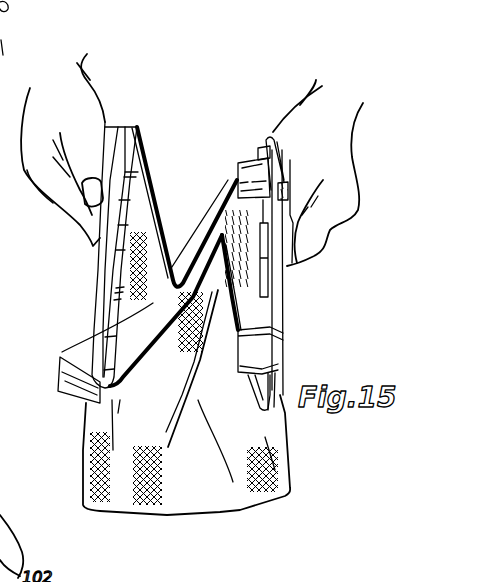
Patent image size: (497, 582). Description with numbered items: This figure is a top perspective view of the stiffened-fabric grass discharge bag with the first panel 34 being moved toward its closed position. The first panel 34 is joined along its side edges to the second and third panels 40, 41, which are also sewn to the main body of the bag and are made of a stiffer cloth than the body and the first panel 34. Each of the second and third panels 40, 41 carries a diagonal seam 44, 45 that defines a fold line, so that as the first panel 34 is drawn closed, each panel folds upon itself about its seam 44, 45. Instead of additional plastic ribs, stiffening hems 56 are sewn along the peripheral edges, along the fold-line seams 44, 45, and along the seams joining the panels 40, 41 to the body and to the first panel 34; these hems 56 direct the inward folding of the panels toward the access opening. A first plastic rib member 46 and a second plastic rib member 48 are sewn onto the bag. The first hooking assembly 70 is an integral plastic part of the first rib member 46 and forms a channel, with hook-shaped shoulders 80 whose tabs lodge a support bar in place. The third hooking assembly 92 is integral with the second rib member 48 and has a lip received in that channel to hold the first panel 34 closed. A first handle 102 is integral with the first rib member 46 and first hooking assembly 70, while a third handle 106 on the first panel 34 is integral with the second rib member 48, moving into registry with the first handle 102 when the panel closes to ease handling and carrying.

The first panel 34 is at (87, 405).
The second panel 40 is at (100, 371).
The third panel 41 is at (158, 200).
The seam 44 is at (195, 402).
The seam 45 is at (200, 250).
The first plastic rib member 46 is at (270, 393).
The second plastic rib member 48 is at (108, 318).
The stiffening hems 56 is at (148, 170).
The first hooking assembly 70 is at (269, 124).
The hook-shaped shoulders 80 is at (238, 162).
The third hooking assembly 92 is at (101, 285).
The first handle 102 is at (288, 285).
The third handle 106 is at (123, 250).